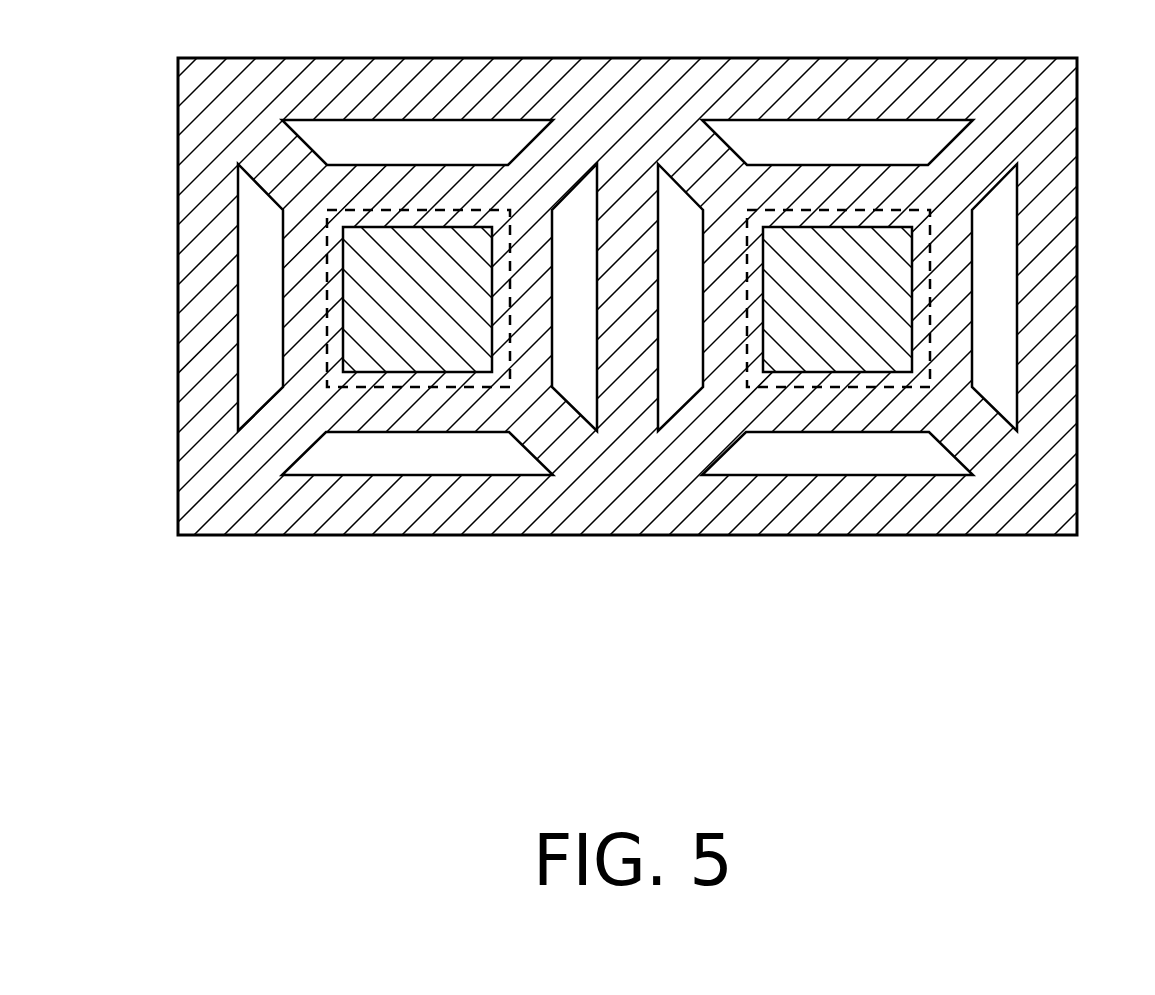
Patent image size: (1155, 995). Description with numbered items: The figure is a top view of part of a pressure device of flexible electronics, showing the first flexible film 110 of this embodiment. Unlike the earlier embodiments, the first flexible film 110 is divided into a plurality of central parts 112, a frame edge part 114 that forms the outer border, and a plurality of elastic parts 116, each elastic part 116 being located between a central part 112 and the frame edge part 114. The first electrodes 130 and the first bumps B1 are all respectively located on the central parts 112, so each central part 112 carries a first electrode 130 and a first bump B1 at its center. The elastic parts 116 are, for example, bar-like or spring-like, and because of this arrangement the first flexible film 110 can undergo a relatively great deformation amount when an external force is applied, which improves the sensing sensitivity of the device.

The first flexible film 110 is at (1137, 647).
The central part 112 is at (860, 395).
The frame edge part 114 is at (1047, 352).
The elastic part 116 is at (973, 428).
The first electrode 130 is at (760, 378).
The first bump B1 is at (825, 322).